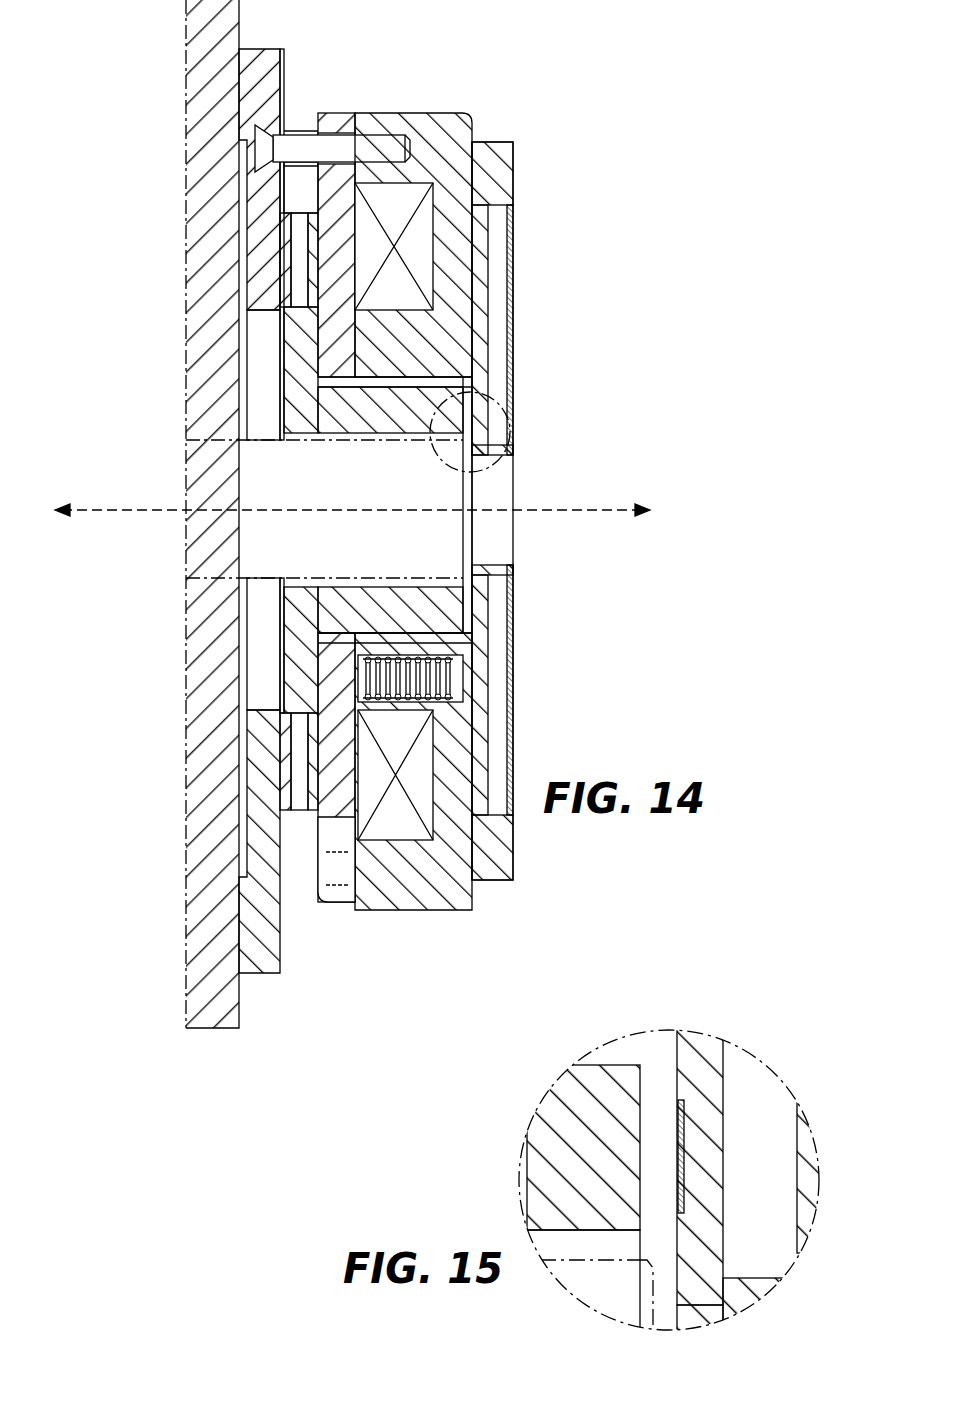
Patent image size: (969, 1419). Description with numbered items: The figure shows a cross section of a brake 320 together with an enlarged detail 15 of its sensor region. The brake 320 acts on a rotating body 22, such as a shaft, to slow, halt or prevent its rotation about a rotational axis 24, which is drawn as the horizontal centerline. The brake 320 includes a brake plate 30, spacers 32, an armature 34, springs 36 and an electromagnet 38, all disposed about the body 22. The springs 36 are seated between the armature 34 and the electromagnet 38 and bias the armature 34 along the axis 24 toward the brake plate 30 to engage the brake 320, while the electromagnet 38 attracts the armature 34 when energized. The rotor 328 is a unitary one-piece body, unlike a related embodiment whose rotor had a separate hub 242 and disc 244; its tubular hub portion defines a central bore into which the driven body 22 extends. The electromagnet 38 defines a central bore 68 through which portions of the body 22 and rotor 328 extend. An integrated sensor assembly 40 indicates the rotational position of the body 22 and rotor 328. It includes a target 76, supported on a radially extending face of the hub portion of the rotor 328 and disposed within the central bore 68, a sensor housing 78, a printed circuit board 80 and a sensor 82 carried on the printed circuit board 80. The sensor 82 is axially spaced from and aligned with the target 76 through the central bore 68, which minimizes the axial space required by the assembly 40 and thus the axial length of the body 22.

In FIG. 14, the brake 320 is at (148, 135).
In FIG. 14, the brake plate 30 is at (282, 95).
In FIG. 14, the spacers 32 is at (312, 130).
In FIG. 14, the armature 34 is at (333, 195).
In FIG. 14, the electromagnet 38 is at (455, 120).
In FIG. 14, the rotor 328 is at (269, 342).
In FIG. 14, the sensor assembly 40 is at (492, 407).
In FIG. 14, the detail circle 15 is at (440, 470).
In FIG. 14, the rotational axis 24 is at (115, 515).
In FIG. 14, the rotating body 22 is at (408, 538).
In FIG. 15, the rotating body 22 is at (610, 1283).
In FIG. 14, the hub 242 is at (262, 590).
In FIG. 14, the disc 244 is at (290, 655).
In FIG. 14, the central bore 68 is at (450, 635).
In FIG. 14, the springs 36 is at (445, 677).
In FIG. 15, the target 76 is at (640, 1157).
In FIG. 15, the printed circuit board 80 is at (705, 1128).
In FIG. 15, the sensor 82 is at (683, 1195).
In FIG. 15, the sensor housing 78 is at (800, 1162).